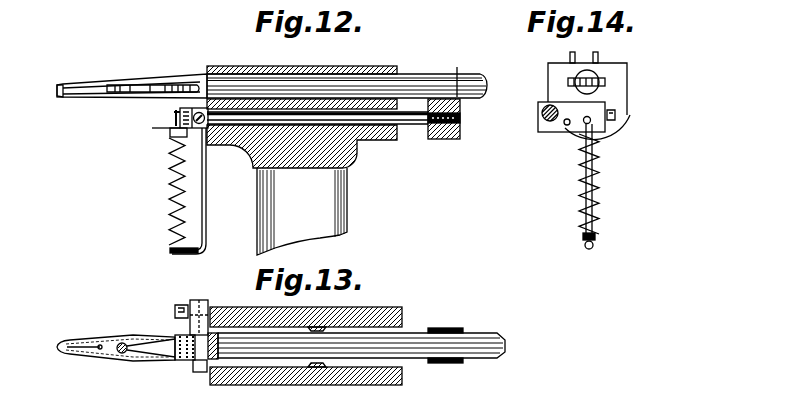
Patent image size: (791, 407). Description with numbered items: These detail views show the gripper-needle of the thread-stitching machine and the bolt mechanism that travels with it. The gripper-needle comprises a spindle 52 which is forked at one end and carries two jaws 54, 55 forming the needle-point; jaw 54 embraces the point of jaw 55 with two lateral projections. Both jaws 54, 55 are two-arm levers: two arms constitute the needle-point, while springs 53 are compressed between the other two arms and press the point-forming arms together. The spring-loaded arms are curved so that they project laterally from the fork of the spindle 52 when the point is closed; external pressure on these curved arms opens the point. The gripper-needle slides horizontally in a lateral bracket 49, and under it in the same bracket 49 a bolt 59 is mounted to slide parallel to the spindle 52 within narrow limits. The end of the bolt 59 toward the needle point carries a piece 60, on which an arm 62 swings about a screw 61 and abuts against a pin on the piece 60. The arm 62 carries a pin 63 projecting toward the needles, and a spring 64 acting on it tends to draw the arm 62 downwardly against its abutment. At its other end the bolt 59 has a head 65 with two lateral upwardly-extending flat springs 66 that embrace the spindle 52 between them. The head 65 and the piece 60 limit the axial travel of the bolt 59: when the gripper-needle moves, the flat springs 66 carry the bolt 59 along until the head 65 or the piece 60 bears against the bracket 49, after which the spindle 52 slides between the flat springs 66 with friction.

In FIG. 12, the lateral bracket 49 is at (388, 141).
In FIG. 13, the lateral bracket 49 is at (401, 375).
In FIG. 14, the lateral bracket 49 is at (618, 100).
In FIG. 12, the spindle 52 is at (267, 82).
In FIG. 13, the spindle 52 is at (277, 349).
In FIG. 12, the springs 53 is at (193, 83).
In FIG. 13, the springs 53 is at (181, 358).
In FIG. 13, the jaw 54 is at (108, 340).
In FIG. 14, the jaw 54 is at (568, 83).
In FIG. 12, the jaw 55 is at (103, 89).
In FIG. 13, the jaw 55 is at (88, 355).
In FIG. 14, the jaw 55 is at (607, 82).
In FIG. 12, the bolt 59 is at (357, 118).
In FIG. 12, the piece 60 is at (204, 133).
In FIG. 13, the piece 60 is at (208, 294).
In FIG. 14, the piece 60 is at (628, 113).
In FIG. 14, the screw 61 is at (547, 122).
In FIG. 12, the arm 62 is at (176, 114).
In FIG. 13, the arm 62 is at (181, 326).
In FIG. 14, the arm 62 is at (611, 128).
In FIG. 12, the pin 63 is at (161, 132).
In FIG. 14, the pin 63 is at (574, 125).
In FIG. 12, the spring 64 is at (169, 202).
In FIG. 14, the spring 64 is at (599, 193).
In FIG. 12, the head 65 is at (460, 139).
In FIG. 12, the flat springs 66 is at (430, 72).
In FIG. 13, the flat springs 66 is at (462, 319).
In FIG. 14, the flat springs 66 is at (584, 50).